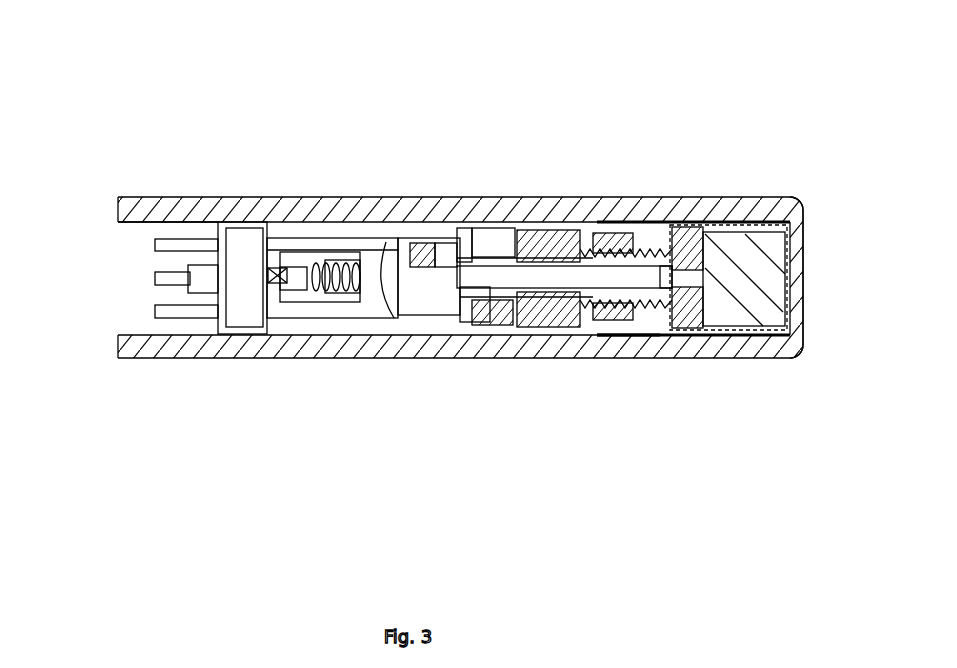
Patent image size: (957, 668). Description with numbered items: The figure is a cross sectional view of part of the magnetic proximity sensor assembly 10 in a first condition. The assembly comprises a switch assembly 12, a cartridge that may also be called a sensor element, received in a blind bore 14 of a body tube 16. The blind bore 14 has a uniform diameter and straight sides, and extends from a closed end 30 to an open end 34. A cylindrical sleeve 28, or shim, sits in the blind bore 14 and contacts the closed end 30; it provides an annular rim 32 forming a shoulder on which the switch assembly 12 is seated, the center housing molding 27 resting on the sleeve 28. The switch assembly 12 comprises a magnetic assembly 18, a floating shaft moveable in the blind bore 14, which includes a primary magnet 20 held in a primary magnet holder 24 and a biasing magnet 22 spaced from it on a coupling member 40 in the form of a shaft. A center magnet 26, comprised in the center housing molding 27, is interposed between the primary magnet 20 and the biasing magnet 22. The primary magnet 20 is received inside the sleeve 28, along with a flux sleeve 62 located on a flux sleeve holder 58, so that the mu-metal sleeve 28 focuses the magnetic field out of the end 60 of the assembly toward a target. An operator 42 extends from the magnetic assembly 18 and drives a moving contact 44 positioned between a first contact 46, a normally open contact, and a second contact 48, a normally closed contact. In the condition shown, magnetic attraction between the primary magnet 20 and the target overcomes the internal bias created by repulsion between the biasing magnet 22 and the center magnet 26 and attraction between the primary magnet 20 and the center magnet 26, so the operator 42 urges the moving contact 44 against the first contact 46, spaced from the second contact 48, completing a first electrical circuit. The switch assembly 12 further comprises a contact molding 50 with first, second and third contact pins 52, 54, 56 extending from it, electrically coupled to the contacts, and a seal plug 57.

The magnetic proximity sensor assembly 10 is at (707, 113).
The switch assembly 12 is at (497, 237).
The blind bore 14 is at (200, 233).
The body tube 16 is at (340, 196).
The magnetic assembly 18 is at (750, 222).
The primary magnet 20 is at (700, 290).
The biasing magnet 22 is at (425, 243).
The primary magnet holder 24 is at (737, 335).
The center magnet 26 is at (556, 245).
The center housing molding 27 is at (553, 300).
The sleeve 28 is at (618, 337).
The closed end 30 is at (740, 249).
The rim 32 is at (594, 240).
The open end 34 is at (118, 262).
The coupling member 40 is at (676, 230).
The operator 42 is at (372, 253).
The moving contact 44 is at (337, 262).
The first contact 46 is at (352, 268).
The second contact 48 is at (328, 285).
The contact molding 50 is at (224, 300).
The first contact pin 52 is at (168, 240).
The second contact pin 54 is at (167, 278).
The third contact pin 56 is at (167, 313).
The seal plug 57 is at (202, 280).
The flux sleeve holder 58 is at (657, 313).
The end 60 is at (807, 282).
The flux sleeve 62 is at (624, 250).